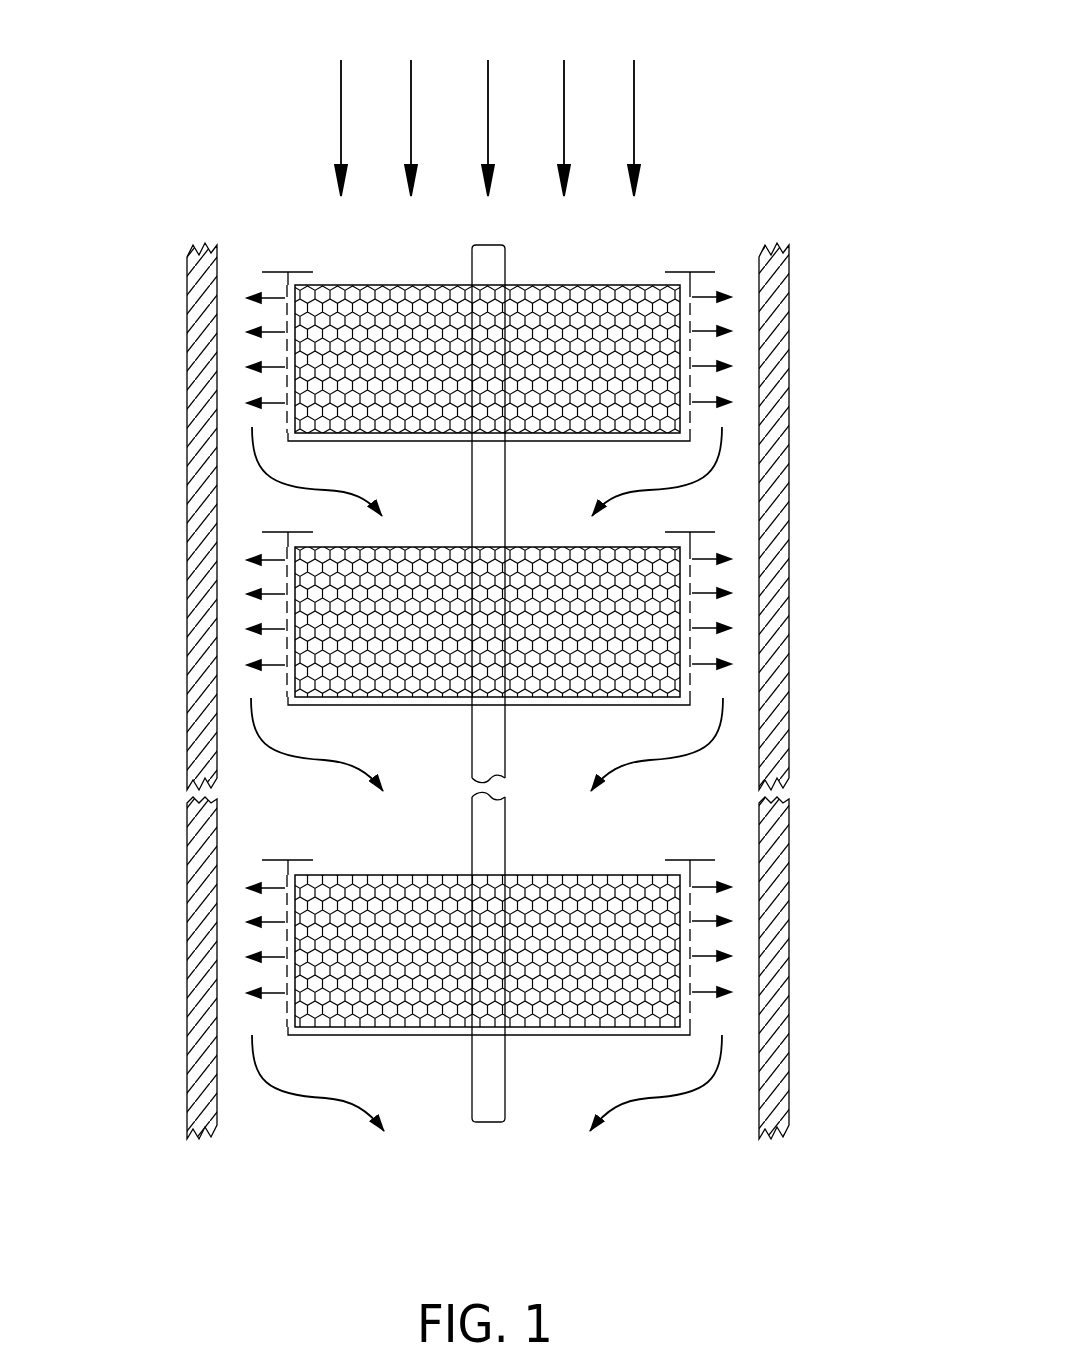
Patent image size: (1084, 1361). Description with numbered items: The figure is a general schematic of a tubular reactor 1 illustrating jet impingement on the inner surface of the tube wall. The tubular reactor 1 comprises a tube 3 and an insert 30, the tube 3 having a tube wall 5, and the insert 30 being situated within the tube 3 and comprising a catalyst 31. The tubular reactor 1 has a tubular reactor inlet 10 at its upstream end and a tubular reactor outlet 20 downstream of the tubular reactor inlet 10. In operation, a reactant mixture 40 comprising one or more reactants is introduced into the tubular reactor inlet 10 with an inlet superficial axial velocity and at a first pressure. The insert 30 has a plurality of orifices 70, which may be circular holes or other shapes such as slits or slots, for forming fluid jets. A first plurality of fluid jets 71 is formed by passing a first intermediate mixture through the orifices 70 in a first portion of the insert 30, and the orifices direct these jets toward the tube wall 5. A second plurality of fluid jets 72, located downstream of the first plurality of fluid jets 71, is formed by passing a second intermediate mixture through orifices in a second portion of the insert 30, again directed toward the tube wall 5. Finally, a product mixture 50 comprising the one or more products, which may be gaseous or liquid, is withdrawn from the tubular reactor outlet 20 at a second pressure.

The tubular reactor 1 is at (860, 154).
The tube 3 is at (160, 670).
The tube wall 5 is at (790, 358).
The tubular reactor inlet 10 is at (610, 275).
The tubular reactor outlet 20 is at (745, 1046).
The insert 30 is at (742, 607).
The catalyst 31 is at (640, 948).
The reactant mixture 40 is at (340, 108).
The product mixture 50 is at (293, 1094).
The orifices 70 is at (287, 299).
The first plurality of fluid jets 71 is at (264, 299).
The second plurality of fluid jets 72 is at (268, 558).